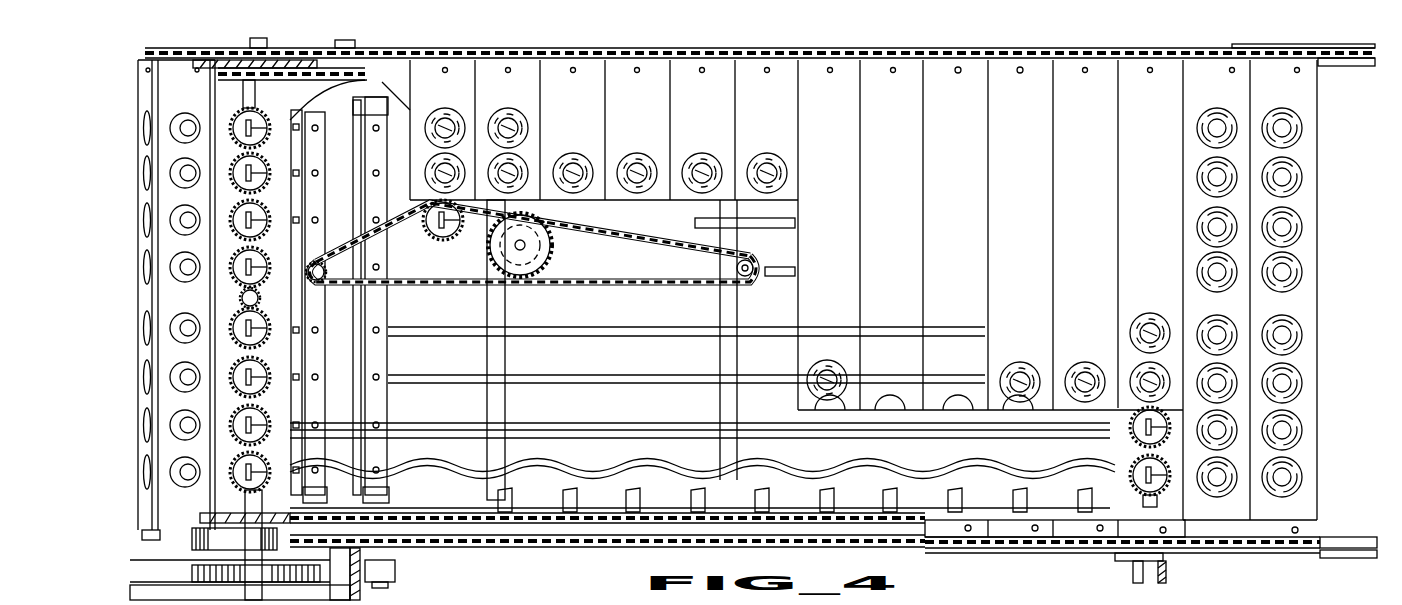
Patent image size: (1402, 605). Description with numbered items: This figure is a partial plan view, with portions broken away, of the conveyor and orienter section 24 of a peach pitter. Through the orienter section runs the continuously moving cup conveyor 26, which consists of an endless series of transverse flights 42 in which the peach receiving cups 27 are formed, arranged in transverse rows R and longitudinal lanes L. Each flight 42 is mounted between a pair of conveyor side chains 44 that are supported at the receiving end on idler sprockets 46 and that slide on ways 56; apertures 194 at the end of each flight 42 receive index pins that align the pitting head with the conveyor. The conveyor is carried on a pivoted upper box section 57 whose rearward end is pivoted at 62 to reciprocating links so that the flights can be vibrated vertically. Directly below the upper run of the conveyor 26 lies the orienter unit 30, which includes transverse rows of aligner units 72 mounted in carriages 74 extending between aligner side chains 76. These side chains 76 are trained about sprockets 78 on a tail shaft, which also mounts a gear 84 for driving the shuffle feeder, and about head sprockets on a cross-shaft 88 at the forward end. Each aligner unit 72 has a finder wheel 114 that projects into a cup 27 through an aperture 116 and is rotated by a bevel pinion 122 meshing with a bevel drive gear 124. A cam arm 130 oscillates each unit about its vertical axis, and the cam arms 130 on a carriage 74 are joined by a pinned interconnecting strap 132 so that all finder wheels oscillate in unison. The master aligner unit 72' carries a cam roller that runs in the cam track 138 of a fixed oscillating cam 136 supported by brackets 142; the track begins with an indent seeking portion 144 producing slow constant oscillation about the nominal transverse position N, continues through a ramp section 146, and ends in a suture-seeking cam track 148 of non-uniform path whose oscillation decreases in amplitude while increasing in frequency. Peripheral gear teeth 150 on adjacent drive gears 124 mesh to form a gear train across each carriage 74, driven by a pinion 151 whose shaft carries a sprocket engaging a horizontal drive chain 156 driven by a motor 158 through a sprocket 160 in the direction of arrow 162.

The orienter section 24 is at (1052, 53).
The cup conveyor 26 is at (782, 52).
The cups 27 is at (180, 137).
The orienter unit 30 is at (590, 430).
The transverse flights 42 is at (705, 70).
The conveyor side chains 44 is at (1150, 58).
The idler sprockets 46 is at (170, 50).
The ways 56 is at (1352, 66).
The upper section 57 is at (1055, 555).
The pivot 62 is at (415, 565).
The aligner units 72 is at (182, 276).
The master aligner unit 72' is at (180, 526).
The carriages 74 is at (245, 88).
The aligner side chains 76 is at (297, 66).
The sprockets 78 is at (222, 66).
The gear 84 is at (193, 573).
The cross-shaft 88 is at (1140, 583).
The finder wheel 114 is at (248, 220).
The apertures 116 is at (185, 267).
The bevel pinion 122 is at (305, 392).
The bevel drive gear 124 is at (230, 338).
The cam arm 130 is at (300, 323).
The interconnecting strap 132 is at (350, 100).
The oscillating cam 136 is at (522, 430).
The cam track 138 is at (576, 470).
The support brackets 142 is at (500, 352).
The indent seeking portion 144 is at (484, 490).
The ramp section 146 is at (752, 430).
The suture-seeking cam track 148 is at (893, 456).
The peripheral gear teeth 150 is at (185, 117).
The pinion 151 is at (242, 298).
The horizontal drive chain 156 is at (588, 292).
The motor 158 is at (565, 217).
The sprocket 160 is at (553, 243).
The arrow 162 is at (642, 295).
The apertures 194 is at (848, 88).
The lanes L is at (1322, 128).
The nominally transverse position N is at (446, 122).
The transverse rows R is at (518, 40).